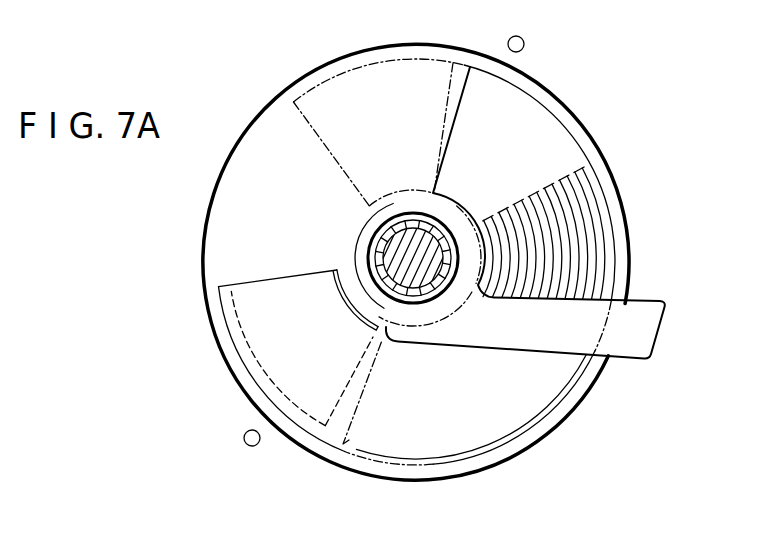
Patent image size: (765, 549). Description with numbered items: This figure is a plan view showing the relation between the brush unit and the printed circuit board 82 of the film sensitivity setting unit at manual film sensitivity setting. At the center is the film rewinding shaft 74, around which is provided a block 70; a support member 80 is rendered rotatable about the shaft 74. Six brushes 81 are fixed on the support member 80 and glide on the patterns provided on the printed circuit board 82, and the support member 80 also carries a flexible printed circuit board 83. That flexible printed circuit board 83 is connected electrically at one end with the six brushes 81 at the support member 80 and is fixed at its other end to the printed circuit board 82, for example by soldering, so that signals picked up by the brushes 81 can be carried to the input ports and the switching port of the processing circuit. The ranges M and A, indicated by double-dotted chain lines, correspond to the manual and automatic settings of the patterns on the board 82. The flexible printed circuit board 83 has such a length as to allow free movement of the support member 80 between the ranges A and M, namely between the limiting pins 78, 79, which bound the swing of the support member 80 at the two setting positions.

The block 70 is at (392, 232).
The shaft 74 is at (402, 257).
The limiting pin 78 is at (524, 41).
The limiting pin 79 is at (252, 446).
The support member 80 is at (643, 312).
The brushes 81 is at (583, 165).
The printed circuit board 82 is at (609, 167).
The flexible printed circuit board 83 is at (505, 413).
The range A is at (435, 52).
The range M is at (537, 102).